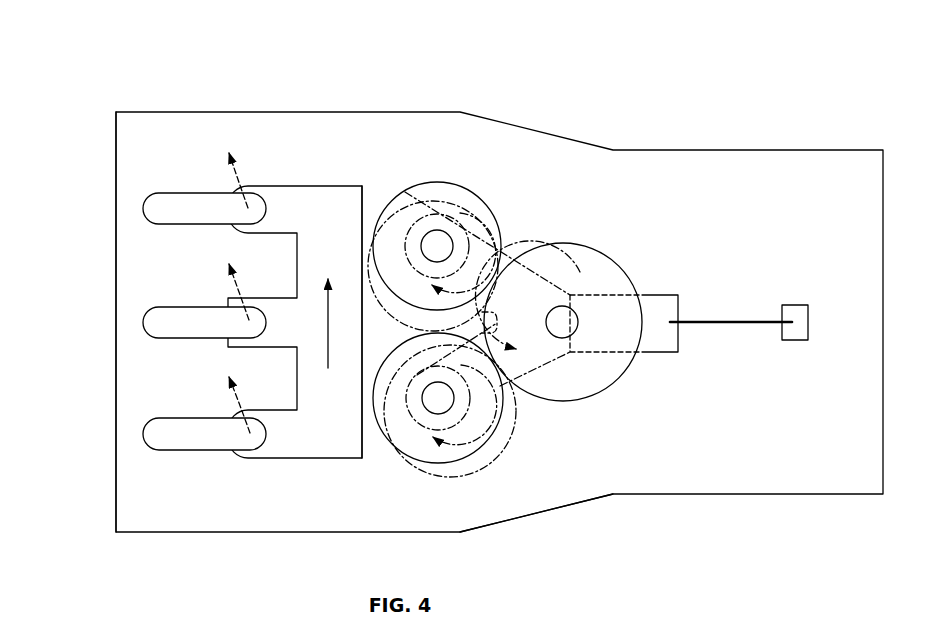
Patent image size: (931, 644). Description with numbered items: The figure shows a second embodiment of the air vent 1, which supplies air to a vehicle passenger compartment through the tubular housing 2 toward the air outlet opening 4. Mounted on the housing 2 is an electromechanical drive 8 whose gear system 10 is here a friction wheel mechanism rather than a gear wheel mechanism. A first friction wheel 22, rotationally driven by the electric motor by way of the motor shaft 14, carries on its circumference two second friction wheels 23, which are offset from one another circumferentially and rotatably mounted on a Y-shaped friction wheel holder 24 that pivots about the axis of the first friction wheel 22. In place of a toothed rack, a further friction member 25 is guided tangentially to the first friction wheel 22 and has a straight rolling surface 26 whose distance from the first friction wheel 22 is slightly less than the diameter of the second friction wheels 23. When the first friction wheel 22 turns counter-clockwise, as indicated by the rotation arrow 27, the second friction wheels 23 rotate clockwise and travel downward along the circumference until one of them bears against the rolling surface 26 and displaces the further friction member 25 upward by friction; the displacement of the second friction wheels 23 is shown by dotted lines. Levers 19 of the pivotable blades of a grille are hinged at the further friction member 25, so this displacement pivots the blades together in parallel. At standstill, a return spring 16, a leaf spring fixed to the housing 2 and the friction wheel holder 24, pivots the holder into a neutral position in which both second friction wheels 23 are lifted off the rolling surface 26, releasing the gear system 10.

The air vent 1 is at (499, 282).
The housing 2 is at (765, 150).
The air outlet opening 4 is at (100, 321).
The electromechanical drive 8 is at (536, 520).
The gear system 10 is at (541, 486).
The motor shaft 14 is at (567, 329).
The return spring 16 is at (730, 321).
The levers 19 is at (183, 210).
The first friction wheel 22 is at (563, 242).
The second friction wheels 23 is at (437, 182).
The friction wheel holder 24 is at (538, 368).
The further friction member 25 is at (322, 445).
The rolling surface 26 is at (364, 198).
The rotation arrow 27 is at (546, 264).